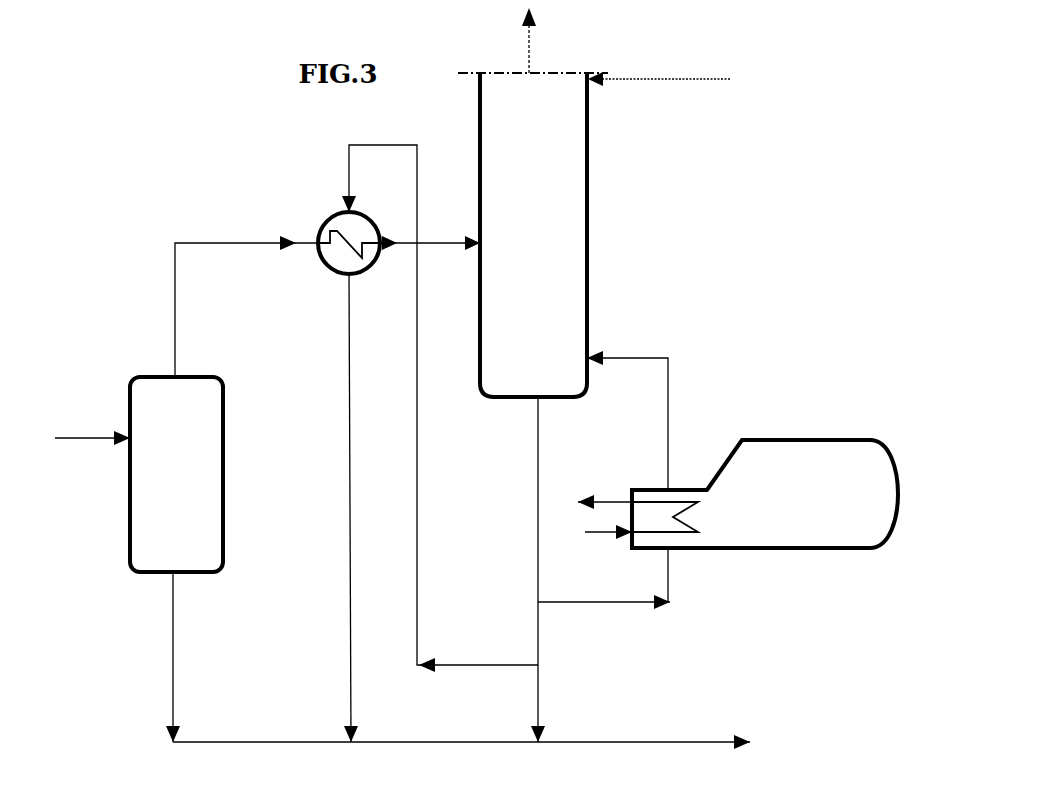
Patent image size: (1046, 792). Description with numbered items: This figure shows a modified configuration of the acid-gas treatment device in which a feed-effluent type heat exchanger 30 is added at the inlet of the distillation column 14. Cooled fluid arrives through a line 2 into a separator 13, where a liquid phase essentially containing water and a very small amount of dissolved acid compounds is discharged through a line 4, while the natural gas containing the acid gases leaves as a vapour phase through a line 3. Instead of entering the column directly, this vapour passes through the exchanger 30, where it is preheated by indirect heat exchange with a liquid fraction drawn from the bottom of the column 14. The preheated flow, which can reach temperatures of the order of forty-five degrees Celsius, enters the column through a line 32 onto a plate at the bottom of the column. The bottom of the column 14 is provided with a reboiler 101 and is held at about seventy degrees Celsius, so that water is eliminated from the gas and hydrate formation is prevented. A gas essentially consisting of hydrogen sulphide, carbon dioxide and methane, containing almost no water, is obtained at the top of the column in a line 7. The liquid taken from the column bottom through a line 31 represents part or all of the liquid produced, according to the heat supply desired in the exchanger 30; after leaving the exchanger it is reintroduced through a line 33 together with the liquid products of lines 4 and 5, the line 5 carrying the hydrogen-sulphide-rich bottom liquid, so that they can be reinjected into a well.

The line 2 is at (88, 435).
The line 3 is at (175, 305).
The line 4 is at (178, 593).
The line 5 is at (670, 742).
The line 7 is at (529, 47).
The separator 13 is at (176, 474).
The column 14 is at (533, 235).
The feed-effluent type heat exchanger 30 is at (328, 221).
The line 31 is at (417, 480).
The line 32 is at (440, 243).
The line 33 is at (351, 475).
The reboiler 101 is at (738, 494).